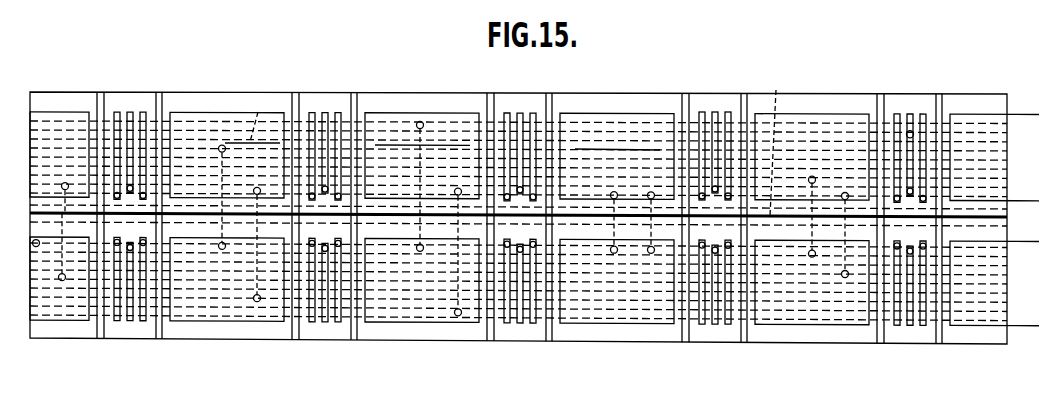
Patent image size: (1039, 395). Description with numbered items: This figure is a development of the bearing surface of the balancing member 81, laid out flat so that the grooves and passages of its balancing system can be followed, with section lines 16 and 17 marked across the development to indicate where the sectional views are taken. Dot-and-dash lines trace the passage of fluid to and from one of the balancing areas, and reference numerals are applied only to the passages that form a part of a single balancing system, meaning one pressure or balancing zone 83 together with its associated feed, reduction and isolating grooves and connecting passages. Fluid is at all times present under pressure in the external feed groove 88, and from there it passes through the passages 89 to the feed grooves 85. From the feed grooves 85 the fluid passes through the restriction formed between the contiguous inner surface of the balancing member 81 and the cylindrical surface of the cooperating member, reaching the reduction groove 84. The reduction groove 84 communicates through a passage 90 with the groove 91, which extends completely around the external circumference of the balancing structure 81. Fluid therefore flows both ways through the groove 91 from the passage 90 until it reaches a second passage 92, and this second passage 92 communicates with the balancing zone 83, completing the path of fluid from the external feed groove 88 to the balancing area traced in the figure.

The balancing member 81 is at (661, 97).
The balancing zone 83 is at (282, 323).
The reduction groove 84 is at (715, 113).
The feed grooves 85 is at (700, 113).
The external feed groove 88 is at (776, 90).
The passages 89 is at (731, 197).
The passage 90 is at (729, 113).
The groove 91 is at (656, 146).
The second passage 92 is at (258, 112).
The section line 16- 16 is at (225, 82).
The section line 17- 17 is at (728, 52).